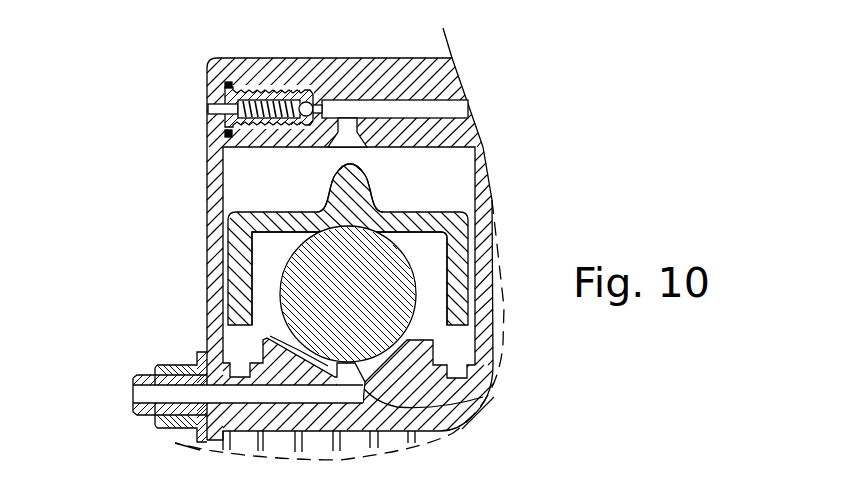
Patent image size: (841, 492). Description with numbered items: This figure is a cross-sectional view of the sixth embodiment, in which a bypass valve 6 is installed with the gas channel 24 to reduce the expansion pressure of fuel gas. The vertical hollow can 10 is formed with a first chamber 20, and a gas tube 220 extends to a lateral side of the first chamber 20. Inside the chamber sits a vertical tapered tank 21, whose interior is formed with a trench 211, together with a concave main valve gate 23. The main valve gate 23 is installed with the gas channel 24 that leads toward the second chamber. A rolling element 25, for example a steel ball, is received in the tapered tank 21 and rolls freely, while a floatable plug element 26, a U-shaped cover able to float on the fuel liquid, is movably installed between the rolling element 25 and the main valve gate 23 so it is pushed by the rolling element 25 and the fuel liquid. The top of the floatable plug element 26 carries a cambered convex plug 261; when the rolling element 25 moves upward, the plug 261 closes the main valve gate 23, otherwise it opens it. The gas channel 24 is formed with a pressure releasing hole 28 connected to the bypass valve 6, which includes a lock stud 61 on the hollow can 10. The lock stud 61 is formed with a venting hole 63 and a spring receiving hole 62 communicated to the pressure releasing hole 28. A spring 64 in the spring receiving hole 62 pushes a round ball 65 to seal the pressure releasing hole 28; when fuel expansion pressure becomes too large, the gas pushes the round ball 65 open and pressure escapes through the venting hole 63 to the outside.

The bypass valve 6 is at (237, 81).
The vertical hollow can 10 is at (447, 88).
The first chamber 20 is at (237, 180).
The tapered tank 21 is at (477, 400).
The trench 211 is at (265, 339).
The gas tube 220 is at (140, 396).
The main valve gate 23 is at (358, 134).
The gas channel 24 is at (432, 108).
The rolling element 25 is at (295, 265).
The floatable plug element 26 is at (238, 217).
The plug 261 is at (356, 189).
The pressure releasing hole 28 is at (322, 104).
The lock stud 61 is at (215, 121).
The spring receiving hole 62 is at (284, 100).
The venting hole 63 is at (215, 110).
The spring 64 is at (206, 91).
The round ball 65 is at (307, 100).